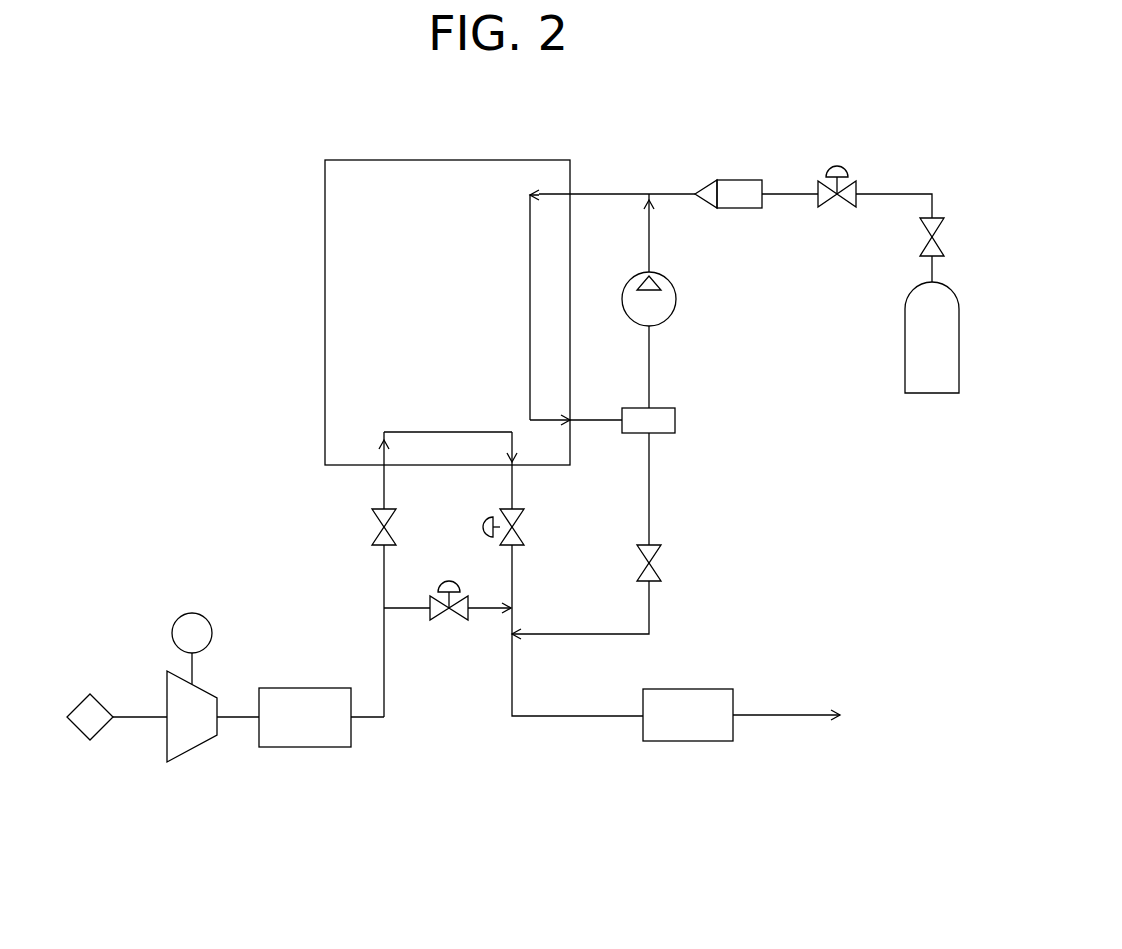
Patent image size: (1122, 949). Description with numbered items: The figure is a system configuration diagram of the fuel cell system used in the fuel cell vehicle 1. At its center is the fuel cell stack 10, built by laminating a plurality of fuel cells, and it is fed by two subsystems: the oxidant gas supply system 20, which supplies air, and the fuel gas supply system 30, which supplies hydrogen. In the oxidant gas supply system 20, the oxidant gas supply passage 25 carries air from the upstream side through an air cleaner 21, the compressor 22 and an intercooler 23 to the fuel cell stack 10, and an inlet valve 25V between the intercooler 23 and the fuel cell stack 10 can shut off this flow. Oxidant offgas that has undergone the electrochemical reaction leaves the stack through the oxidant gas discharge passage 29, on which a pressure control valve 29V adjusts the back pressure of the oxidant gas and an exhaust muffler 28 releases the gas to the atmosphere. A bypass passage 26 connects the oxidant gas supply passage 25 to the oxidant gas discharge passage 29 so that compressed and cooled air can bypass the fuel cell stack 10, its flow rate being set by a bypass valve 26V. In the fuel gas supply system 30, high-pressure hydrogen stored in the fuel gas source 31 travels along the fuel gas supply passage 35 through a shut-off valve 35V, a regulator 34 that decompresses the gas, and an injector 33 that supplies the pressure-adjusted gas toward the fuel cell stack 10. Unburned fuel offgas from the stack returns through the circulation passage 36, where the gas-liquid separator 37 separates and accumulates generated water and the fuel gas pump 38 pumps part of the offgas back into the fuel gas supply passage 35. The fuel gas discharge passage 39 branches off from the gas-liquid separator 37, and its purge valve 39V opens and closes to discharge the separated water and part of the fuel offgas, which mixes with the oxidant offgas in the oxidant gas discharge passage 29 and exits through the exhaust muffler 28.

The fuel cell vehicle 1 is at (866, 105).
The fuel cell stack 10 is at (343, 160).
The oxidant gas supply system 20 is at (222, 597).
The air cleaner 21 is at (85, 698).
The compressor 22 is at (196, 745).
The intercooler 23 is at (310, 740).
The oxidant gas supply passage 25 is at (384, 636).
The inlet valve 25V is at (372, 528).
The bypass passage 26 is at (487, 610).
The bypass valve 26V is at (444, 620).
The exhaust muffler 28 is at (683, 740).
The oxidant gas discharge passage 29 is at (512, 672).
The pressure control valve 29V is at (524, 528).
The fuel gas supply system 30 is at (800, 427).
The fuel gas source 31 is at (905, 364).
The injector 33 is at (740, 180).
The regulator 34 is at (836, 208).
The fuel gas supply passage 35 is at (660, 194).
The shut-off valve 35V is at (925, 248).
The circulation passage 36 is at (649, 364).
The gas-liquid separator 37 is at (675, 421).
The fuel gas pump 38 is at (670, 300).
The fuel gas discharge passage 39 is at (649, 620).
The purge valve 39V is at (661, 564).